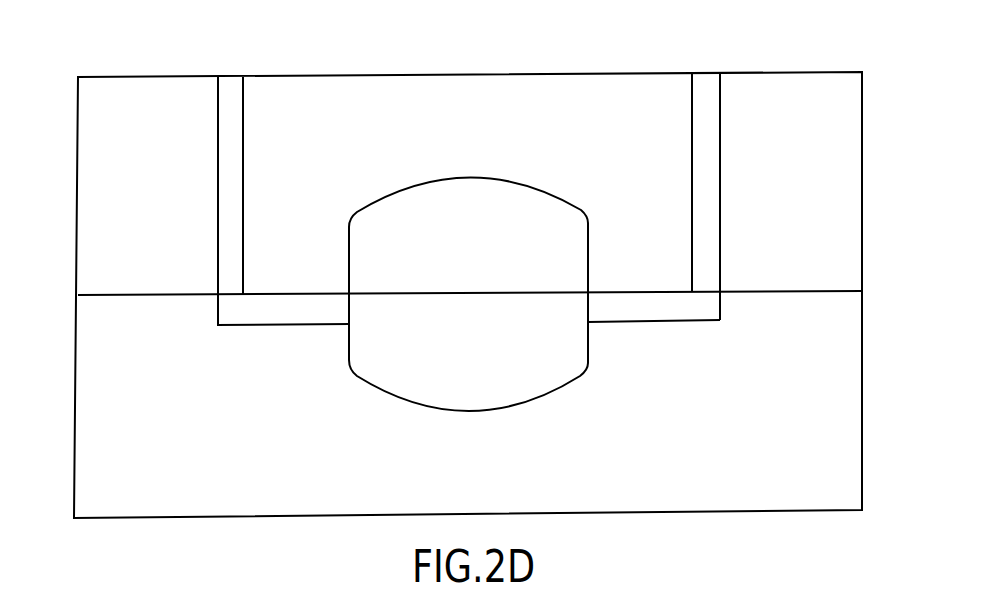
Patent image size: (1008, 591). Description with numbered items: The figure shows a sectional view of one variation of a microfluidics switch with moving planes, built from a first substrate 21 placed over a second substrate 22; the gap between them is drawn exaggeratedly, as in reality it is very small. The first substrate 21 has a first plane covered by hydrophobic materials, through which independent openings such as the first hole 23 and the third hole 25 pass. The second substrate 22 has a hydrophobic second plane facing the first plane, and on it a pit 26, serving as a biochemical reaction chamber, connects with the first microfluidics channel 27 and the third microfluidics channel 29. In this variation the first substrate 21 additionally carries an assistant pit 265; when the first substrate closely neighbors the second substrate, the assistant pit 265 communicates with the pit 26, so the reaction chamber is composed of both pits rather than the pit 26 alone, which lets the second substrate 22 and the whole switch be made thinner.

The first substrate 21 is at (812, 246).
The second substrate 22 is at (740, 468).
The first hole 23 is at (228, 93).
The third hole 25 is at (702, 90).
The pit 26 is at (490, 336).
The assistant pit 265 is at (490, 278).
The first microfluidics channel 27 is at (237, 309).
The third microfluidics channel 29 is at (700, 306).